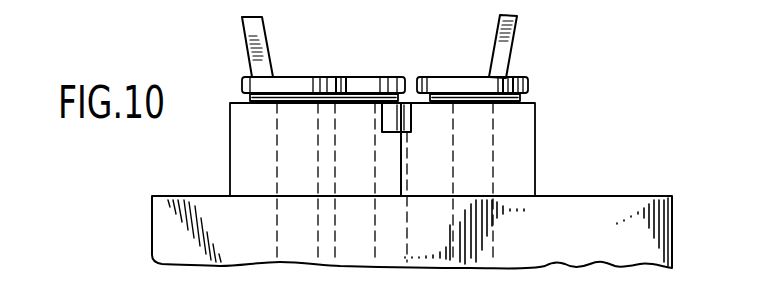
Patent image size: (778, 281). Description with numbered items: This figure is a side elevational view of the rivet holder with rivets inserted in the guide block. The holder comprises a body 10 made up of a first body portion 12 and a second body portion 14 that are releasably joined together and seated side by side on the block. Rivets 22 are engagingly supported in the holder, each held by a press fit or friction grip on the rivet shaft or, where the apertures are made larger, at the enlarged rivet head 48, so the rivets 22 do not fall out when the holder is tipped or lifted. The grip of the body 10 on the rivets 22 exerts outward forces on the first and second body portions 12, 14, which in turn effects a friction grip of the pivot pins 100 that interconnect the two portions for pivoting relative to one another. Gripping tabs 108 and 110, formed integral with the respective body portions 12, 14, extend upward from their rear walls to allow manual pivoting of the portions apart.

The body 10 is at (554, 120).
The first body portion 12 is at (230, 170).
The second body portion 14 is at (537, 148).
The rivet 22 is at (385, 68).
The enlarged rivet head 48 is at (338, 75).
The pivot pins 100 is at (406, 151).
The gripping tab 108 is at (251, 54).
The gripping tab 110 is at (514, 47).